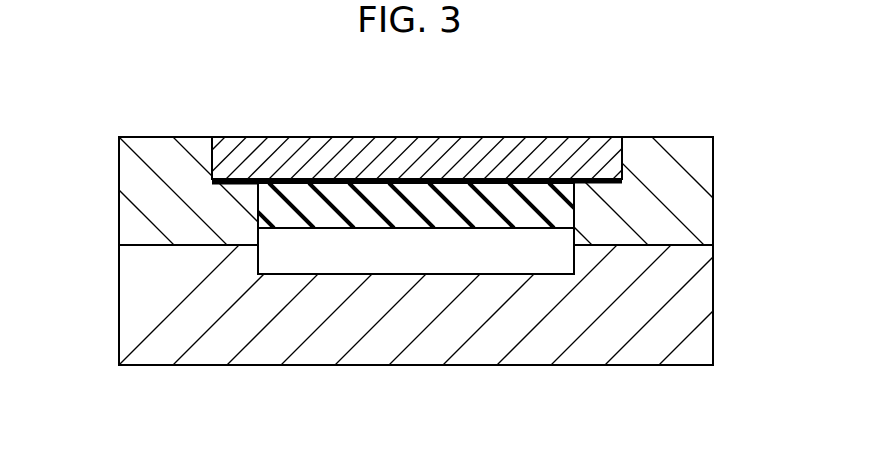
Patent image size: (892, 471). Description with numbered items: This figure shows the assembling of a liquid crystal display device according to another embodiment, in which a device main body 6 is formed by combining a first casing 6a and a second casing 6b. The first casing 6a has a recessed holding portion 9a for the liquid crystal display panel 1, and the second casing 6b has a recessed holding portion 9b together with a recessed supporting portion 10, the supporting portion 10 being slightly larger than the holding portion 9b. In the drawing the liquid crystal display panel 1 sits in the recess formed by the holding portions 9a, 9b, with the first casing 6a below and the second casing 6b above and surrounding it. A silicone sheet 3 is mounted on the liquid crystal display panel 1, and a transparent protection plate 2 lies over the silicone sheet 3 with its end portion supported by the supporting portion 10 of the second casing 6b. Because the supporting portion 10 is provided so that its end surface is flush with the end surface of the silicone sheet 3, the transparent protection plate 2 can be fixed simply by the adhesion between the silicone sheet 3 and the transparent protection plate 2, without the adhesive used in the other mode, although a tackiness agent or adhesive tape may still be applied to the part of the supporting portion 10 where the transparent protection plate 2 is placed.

The liquid crystal display panel 1 is at (351, 260).
The transparent protection plate 2 is at (330, 137).
The silicone sheet 3 is at (420, 187).
The device main body 6 is at (772, 213).
The first casing 6a is at (697, 300).
The second casing 6b is at (697, 228).
The holding portion 9a is at (256, 234).
The holding portion 9b is at (257, 260).
The supporting portion 10 is at (227, 185).